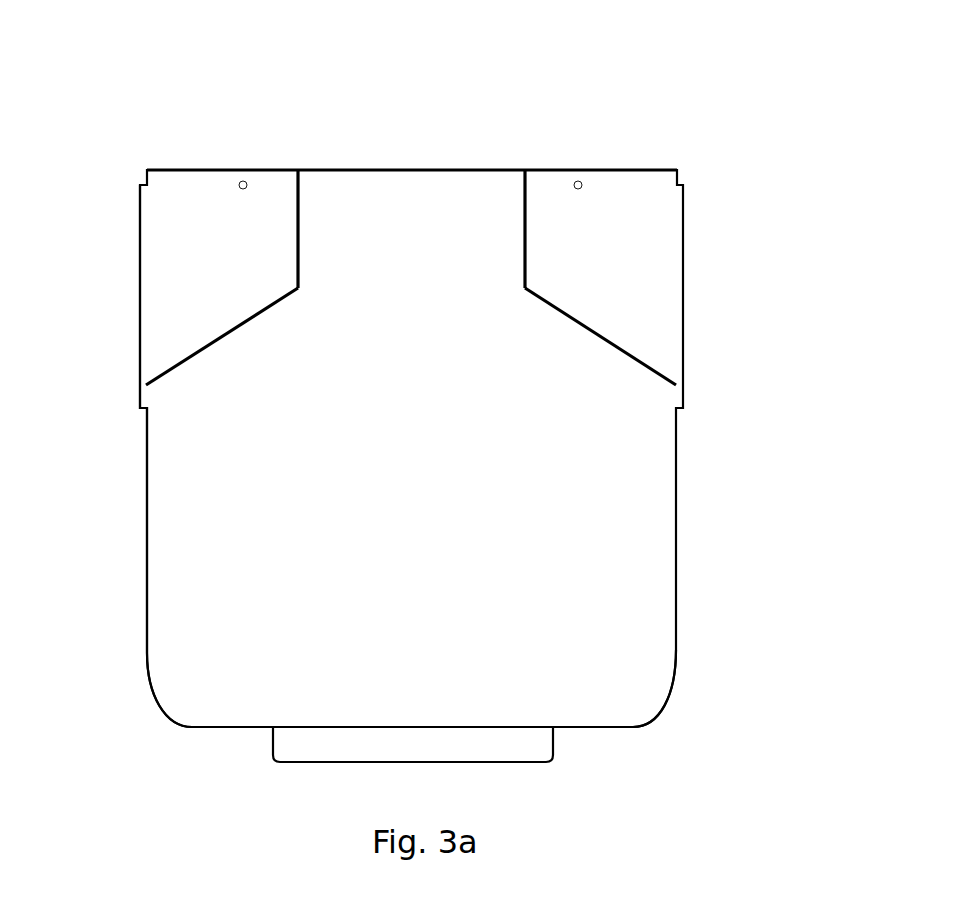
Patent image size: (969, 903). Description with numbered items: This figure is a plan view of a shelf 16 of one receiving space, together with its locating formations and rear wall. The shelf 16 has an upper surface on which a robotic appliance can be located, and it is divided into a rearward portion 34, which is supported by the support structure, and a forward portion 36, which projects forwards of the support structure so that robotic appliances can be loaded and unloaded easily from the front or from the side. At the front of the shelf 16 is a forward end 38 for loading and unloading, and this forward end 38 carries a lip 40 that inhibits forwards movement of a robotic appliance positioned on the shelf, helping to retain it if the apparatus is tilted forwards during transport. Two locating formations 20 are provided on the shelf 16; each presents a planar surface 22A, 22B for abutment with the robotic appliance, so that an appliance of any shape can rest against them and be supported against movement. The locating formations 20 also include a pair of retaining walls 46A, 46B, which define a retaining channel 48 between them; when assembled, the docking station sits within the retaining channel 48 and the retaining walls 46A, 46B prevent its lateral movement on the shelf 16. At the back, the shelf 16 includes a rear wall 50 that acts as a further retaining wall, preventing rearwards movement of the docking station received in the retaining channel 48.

The shelf 16 is at (717, 248).
The locating formation 20 is at (285, 290).
The planar surface 22A is at (596, 340).
The planar surface 22B is at (240, 330).
The rearward portion 34 is at (183, 262).
The forward portion 36 is at (212, 590).
The forward end 38 is at (586, 727).
The lip 40 is at (291, 743).
The retaining wall 46A is at (525, 222).
The retaining wall 46B is at (300, 228).
The retaining channel 48 is at (396, 218).
The rear wall 50 is at (451, 170).